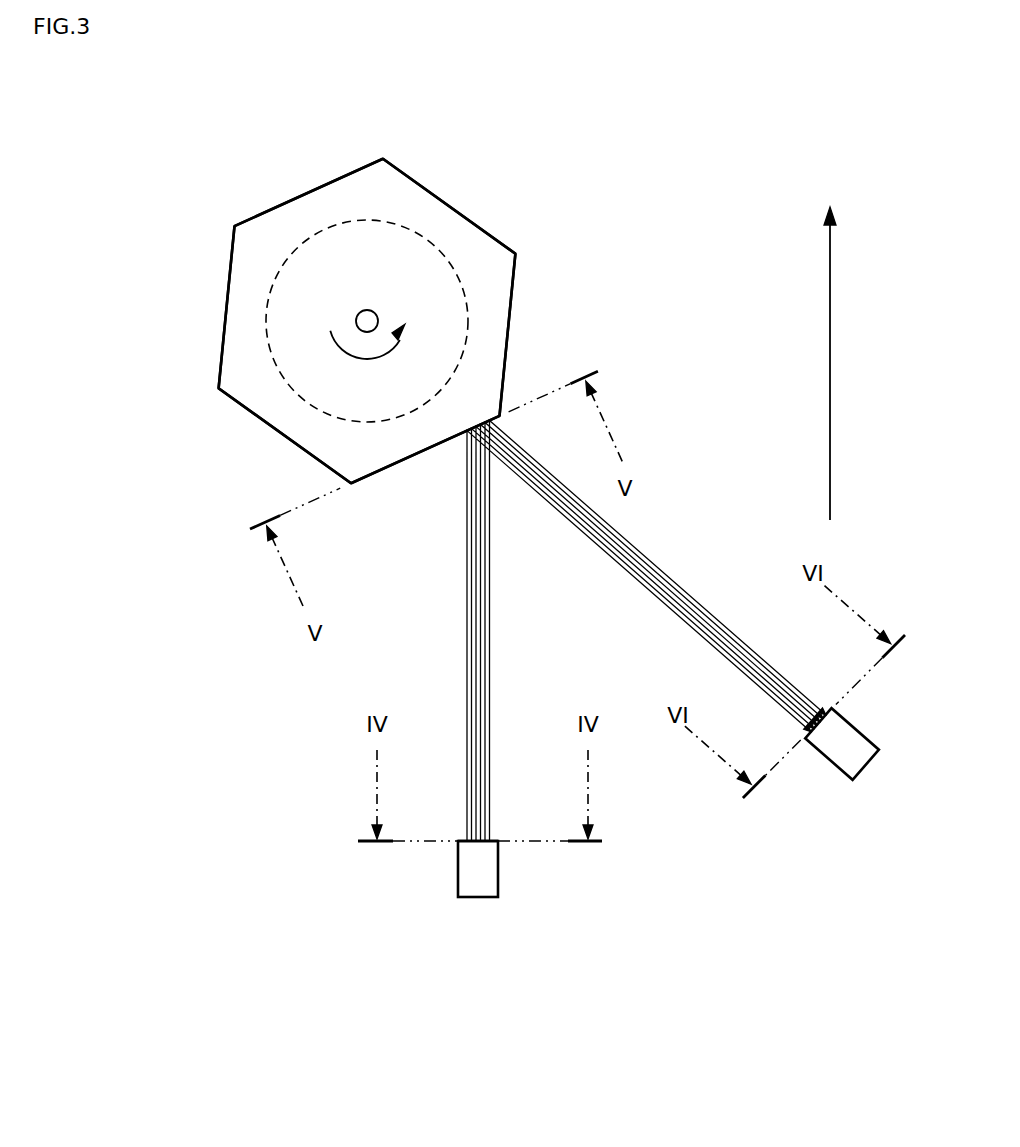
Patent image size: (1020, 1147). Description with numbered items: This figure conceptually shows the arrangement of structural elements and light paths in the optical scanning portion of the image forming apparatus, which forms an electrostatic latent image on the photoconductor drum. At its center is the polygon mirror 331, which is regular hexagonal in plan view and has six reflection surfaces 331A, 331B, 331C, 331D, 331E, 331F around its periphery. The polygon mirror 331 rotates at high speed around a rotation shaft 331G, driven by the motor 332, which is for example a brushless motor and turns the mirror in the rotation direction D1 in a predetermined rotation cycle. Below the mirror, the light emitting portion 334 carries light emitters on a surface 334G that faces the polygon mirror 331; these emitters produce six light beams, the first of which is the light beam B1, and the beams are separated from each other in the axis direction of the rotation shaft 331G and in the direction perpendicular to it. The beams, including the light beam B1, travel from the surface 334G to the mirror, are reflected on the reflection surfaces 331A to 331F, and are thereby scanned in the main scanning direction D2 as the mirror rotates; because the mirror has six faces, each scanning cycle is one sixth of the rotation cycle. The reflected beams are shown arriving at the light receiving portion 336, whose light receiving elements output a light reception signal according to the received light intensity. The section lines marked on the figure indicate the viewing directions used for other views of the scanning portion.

The polygon mirror 331 is at (206, 168).
The reflection surface 331A is at (430, 449).
The reflection surface 331B is at (236, 402).
The reflection surface 331C is at (227, 300).
The reflection surface 331D is at (307, 194).
The reflection surface 331E is at (456, 210).
The reflection surface 331F is at (512, 297).
The rotation shaft 331G is at (368, 309).
The motor 332 is at (267, 338).
The light emitting portion 334 is at (457, 903).
The surface 334G is at (495, 840).
The light receiving portion 336 is at (855, 730).
The light beam B1 is at (505, 597).
The rotation direction D1 is at (368, 359).
The main scanning direction D2 is at (830, 381).